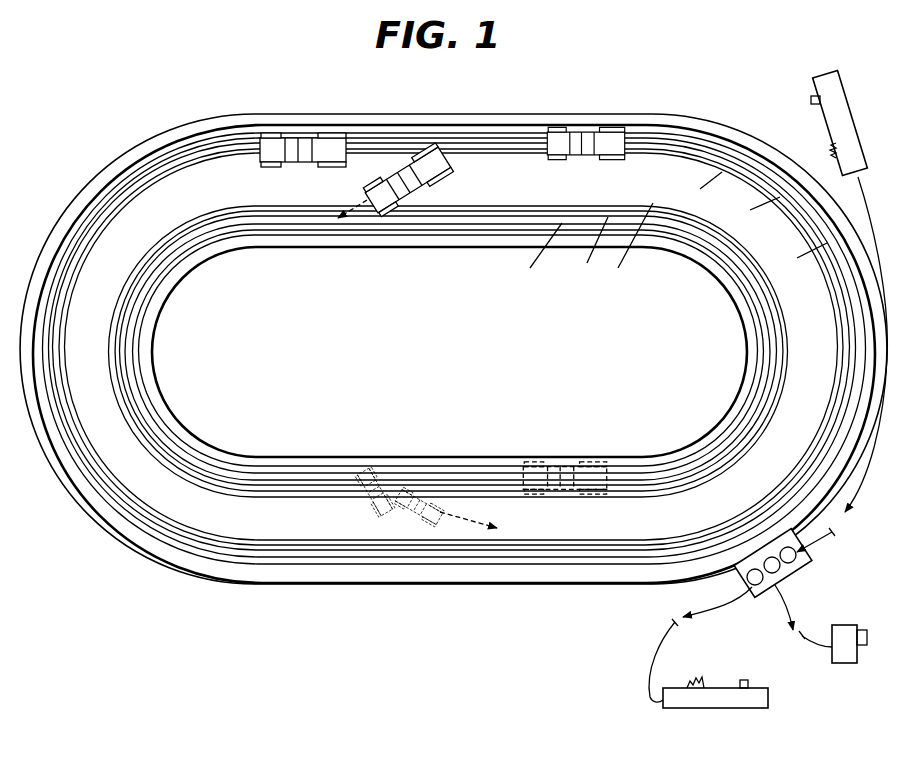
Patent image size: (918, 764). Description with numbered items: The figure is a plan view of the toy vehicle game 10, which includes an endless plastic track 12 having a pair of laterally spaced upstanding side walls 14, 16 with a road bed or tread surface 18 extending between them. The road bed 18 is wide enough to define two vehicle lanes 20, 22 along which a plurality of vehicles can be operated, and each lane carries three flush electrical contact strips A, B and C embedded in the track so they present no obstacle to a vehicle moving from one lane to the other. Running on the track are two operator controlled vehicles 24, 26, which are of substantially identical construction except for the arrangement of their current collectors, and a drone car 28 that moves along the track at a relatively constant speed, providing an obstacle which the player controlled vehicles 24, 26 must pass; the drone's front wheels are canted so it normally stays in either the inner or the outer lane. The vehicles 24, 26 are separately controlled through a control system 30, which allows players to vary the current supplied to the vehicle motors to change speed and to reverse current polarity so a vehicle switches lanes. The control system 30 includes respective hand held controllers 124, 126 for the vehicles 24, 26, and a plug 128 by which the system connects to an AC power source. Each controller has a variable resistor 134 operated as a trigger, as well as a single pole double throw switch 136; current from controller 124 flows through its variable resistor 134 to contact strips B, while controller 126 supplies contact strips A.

The toy vehicle game 10 is at (676, 62).
The endless plastic track 12 is at (502, 113).
The side wall 14 is at (712, 125).
The side wall 16 is at (388, 246).
The road bed or tread surface 18 is at (187, 200).
The vehicle lane 20 is at (207, 466).
The vehicle lane 22 is at (132, 521).
The operator controlled vehicle 24 is at (603, 152).
The operator controlled vehicle 26 is at (452, 168).
The drone car 28 is at (343, 140).
The control system 30 is at (793, 664).
The controller 124 is at (692, 703).
The controller 126 is at (875, 35).
The plug 128 is at (862, 594).
The variable resistor 134 is at (828, 148).
The single pole double throw switch 136 is at (813, 103).